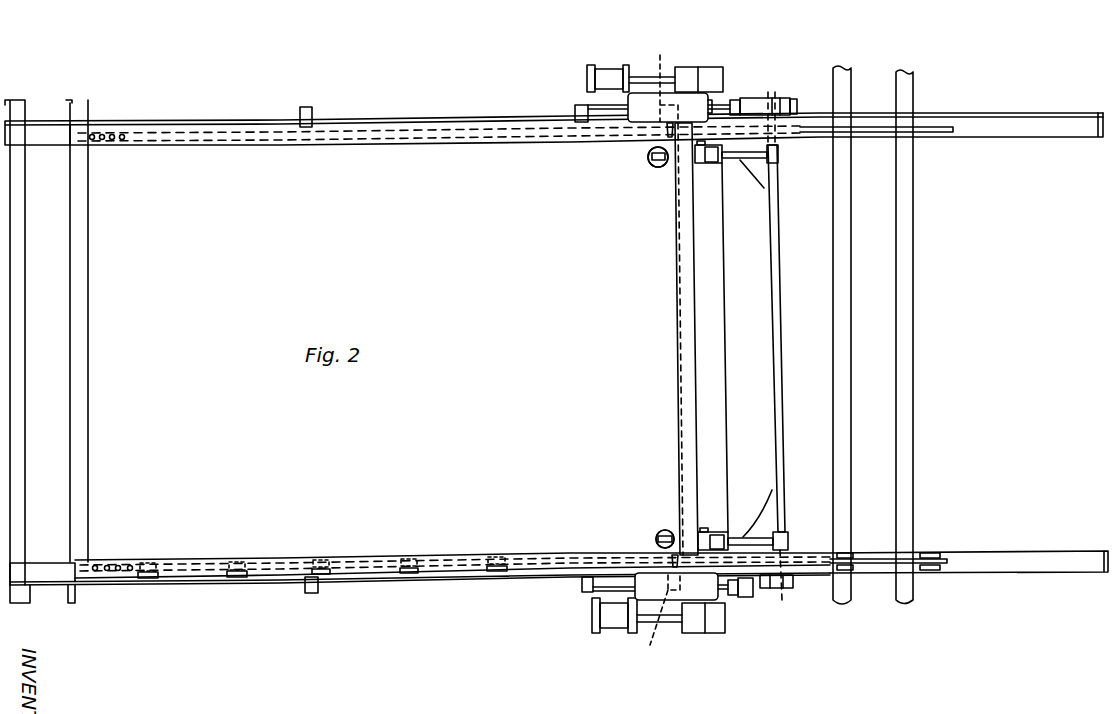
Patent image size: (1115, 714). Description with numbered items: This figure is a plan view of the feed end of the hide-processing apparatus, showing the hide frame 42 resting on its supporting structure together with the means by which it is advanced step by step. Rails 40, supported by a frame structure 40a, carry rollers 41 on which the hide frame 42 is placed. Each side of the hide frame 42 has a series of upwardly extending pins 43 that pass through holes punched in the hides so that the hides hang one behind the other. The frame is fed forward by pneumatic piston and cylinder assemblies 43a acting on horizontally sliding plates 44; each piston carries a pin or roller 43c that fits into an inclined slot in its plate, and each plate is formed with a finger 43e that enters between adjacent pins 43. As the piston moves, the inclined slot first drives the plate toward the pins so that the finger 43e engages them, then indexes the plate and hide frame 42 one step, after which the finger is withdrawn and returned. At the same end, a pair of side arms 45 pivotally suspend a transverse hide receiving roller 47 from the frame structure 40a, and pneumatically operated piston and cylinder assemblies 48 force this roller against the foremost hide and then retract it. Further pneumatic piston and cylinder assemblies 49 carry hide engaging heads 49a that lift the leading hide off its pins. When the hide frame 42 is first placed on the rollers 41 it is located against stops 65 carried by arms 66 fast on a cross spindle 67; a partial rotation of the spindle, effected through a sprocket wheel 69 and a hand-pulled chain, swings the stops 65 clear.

The rails 40 is at (55, 130).
The frame structure 40a is at (78, 594).
The rollers 41 is at (155, 572).
The hide frame 42 is at (215, 146).
The pins 43 is at (122, 141).
The pneumatic piston and cylinder assemblies 43a is at (752, 107).
The pin or roller 43c is at (648, 157).
The finger 43e is at (672, 560).
The horizontally sliding plates 44 is at (673, 350).
The side arms 45 is at (713, 75).
The hide receiving roller 47 is at (714, 333).
The pneumatically operated piston and cylinder assemblies 48 is at (598, 82).
The pneumatic piston and cylinder assemblies 49 is at (656, 167).
The hide engaging heads 49a is at (667, 132).
The stops 65 is at (712, 165).
The arms 66 is at (735, 160).
The cross spindle 67 is at (776, 252).
The sprocket wheel 69 is at (790, 584).